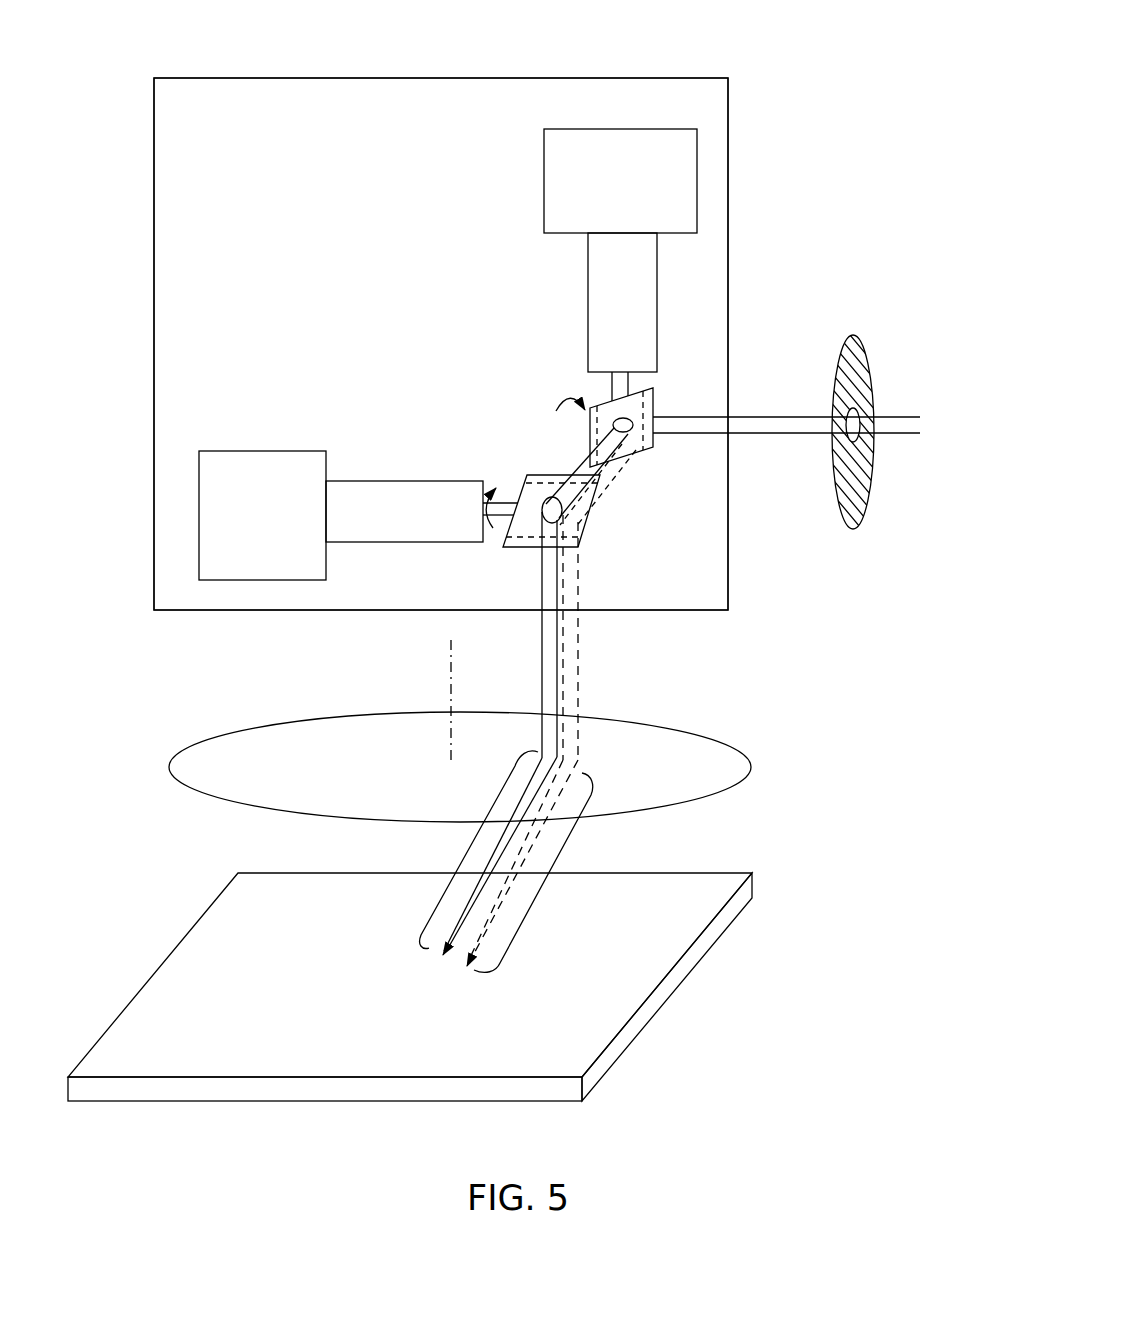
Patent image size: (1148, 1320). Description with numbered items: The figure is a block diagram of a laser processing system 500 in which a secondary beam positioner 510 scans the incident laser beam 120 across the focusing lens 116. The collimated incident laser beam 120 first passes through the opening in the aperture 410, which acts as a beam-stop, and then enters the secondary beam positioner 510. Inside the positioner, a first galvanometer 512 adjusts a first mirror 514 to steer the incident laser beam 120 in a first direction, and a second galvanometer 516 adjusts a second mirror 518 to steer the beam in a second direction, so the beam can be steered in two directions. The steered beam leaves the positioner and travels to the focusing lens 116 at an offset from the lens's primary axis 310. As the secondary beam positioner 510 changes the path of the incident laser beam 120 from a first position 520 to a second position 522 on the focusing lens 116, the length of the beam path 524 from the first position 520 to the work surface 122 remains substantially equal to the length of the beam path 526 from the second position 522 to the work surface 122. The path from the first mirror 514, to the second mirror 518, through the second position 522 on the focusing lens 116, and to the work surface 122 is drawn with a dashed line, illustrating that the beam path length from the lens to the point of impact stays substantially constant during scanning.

The laser processing system 500 is at (246, 40).
The secondary beam positioner 510 is at (257, 234).
The first galvanometer 512 is at (600, 192).
The first mirror 514 is at (651, 448).
The second galvanometer 516 is at (241, 522).
The second mirror 518 is at (560, 475).
The aperture 410 is at (838, 370).
The incident laser beam 120 is at (757, 435).
The focusing lens 116 is at (288, 720).
The primary axis 310 is at (450, 676).
The first position 520 is at (536, 752).
The second position 522 is at (586, 765).
The beam path 524 is at (464, 857).
The beam path 526 is at (550, 872).
The work surface 122 is at (194, 1022).